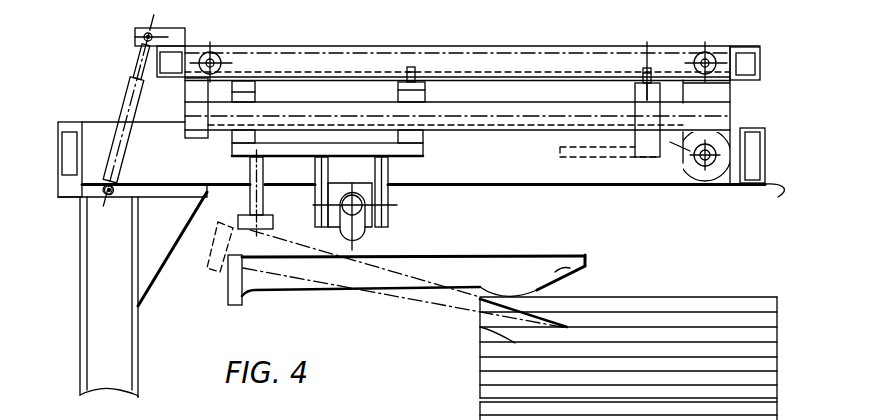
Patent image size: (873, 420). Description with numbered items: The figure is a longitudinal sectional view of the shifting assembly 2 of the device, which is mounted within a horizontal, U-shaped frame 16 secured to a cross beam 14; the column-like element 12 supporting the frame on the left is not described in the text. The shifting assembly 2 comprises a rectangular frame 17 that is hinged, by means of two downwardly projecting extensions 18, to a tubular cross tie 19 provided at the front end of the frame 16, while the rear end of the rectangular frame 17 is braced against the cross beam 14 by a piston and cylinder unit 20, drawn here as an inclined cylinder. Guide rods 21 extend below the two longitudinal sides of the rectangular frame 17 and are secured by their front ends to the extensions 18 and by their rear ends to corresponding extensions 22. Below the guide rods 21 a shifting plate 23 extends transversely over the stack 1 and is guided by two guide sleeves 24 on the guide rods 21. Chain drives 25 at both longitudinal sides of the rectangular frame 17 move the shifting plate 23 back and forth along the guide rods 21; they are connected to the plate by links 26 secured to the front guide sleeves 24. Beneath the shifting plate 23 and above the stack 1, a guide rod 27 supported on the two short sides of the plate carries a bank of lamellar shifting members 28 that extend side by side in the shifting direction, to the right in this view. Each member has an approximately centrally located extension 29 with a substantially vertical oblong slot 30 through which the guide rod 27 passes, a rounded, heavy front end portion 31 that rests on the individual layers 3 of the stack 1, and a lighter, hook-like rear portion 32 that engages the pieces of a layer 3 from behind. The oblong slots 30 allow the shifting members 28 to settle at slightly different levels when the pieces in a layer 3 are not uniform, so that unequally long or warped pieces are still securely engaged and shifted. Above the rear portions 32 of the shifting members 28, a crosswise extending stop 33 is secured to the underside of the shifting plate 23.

The stack 1 is at (692, 387).
The shifting assembly 2 is at (580, 212).
The layer 3 is at (698, 272).
The support column 12 is at (90, 250).
The cross beam 14 is at (62, 157).
The U-shaped frame 16 is at (762, 179).
The rectangular frame 17 is at (755, 62).
The extensions 18 is at (730, 147).
The tubular cross tie 19 is at (703, 166).
The piston and cylinder unit 20 is at (125, 110).
The guide rods 21 is at (510, 125).
The extensions 22 is at (195, 95).
The shifting plate 23 is at (400, 158).
The guide sleeves 24 is at (423, 87).
The chain drives 25 is at (543, 30).
The links 26 is at (405, 70).
The guide rod 27 is at (328, 208).
The lamellar shifting members 28 is at (440, 242).
The extensions 29 is at (365, 246).
The oblong slots 30 is at (343, 233).
The front end portion 31 is at (583, 265).
The rear portion 32 is at (235, 287).
The stop 33 is at (238, 214).